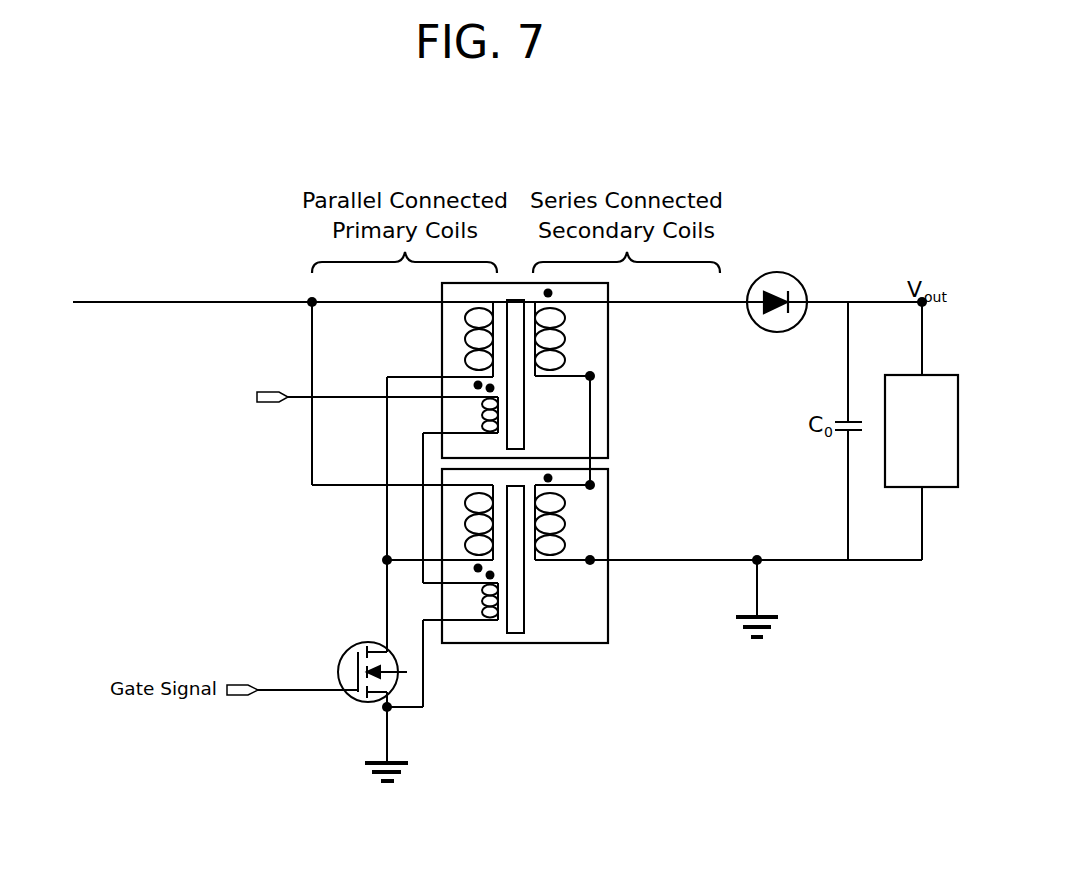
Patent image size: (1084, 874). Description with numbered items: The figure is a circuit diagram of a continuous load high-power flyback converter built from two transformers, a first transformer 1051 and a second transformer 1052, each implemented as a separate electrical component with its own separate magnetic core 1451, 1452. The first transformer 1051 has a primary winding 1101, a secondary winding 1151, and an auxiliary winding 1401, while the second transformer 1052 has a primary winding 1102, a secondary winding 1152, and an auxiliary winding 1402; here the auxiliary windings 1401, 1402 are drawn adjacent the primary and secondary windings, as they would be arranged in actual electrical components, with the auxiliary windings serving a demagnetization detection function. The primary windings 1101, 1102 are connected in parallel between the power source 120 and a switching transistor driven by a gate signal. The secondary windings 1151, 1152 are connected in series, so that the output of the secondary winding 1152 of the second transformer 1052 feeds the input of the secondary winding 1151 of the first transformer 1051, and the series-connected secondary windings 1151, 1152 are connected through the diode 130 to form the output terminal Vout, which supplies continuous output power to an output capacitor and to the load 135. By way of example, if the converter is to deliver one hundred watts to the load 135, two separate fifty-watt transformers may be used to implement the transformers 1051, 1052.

The power source 120 is at (113, 296).
The diode 130 is at (794, 357).
The load 135 is at (903, 456).
The first transformer 1051 is at (421, 370).
The second transformer 1052 is at (505, 555).
The primary winding 1101 is at (467, 358).
The primary winding 1102 is at (467, 546).
The secondary winding 1151 is at (567, 359).
The secondary winding 1152 is at (567, 503).
The auxiliary winding 1401 is at (485, 405).
The auxiliary winding 1402 is at (485, 593).
The magnetic core 1451 is at (517, 436).
The magnetic core 1452 is at (518, 625).